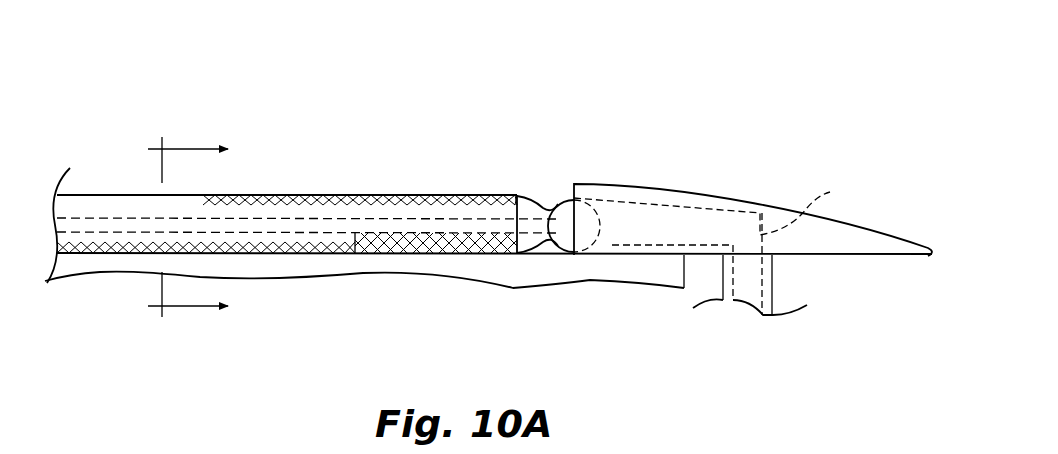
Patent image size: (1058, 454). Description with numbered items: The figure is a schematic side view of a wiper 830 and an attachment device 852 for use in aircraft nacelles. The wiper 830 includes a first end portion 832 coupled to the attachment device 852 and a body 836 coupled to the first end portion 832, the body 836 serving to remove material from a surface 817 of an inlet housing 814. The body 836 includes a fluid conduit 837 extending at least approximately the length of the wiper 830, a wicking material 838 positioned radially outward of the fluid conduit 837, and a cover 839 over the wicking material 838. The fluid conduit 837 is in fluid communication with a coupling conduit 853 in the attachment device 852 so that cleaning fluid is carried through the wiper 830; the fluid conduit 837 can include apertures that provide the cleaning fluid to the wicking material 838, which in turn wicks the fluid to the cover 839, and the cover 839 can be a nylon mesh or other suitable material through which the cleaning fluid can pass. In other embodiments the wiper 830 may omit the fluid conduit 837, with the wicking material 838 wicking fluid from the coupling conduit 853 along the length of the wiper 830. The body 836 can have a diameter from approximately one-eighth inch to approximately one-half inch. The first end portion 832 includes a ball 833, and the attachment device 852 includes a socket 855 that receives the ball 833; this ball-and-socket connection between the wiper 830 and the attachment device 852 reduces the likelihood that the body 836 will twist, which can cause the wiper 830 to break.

The wiper 830 is at (288, 77).
The first end portion 832 is at (503, 170).
The ball 833 is at (560, 206).
The cover 839 is at (342, 197).
The body 836 is at (98, 245).
The surface 817 is at (266, 254).
The inlet housing 814 is at (310, 266).
The fluid conduit 837 is at (345, 233).
The wicking material 838 is at (460, 254).
The attachment device 852 is at (677, 185).
The coupling conduit 853 is at (830, 192).
The socket 855 is at (603, 252).